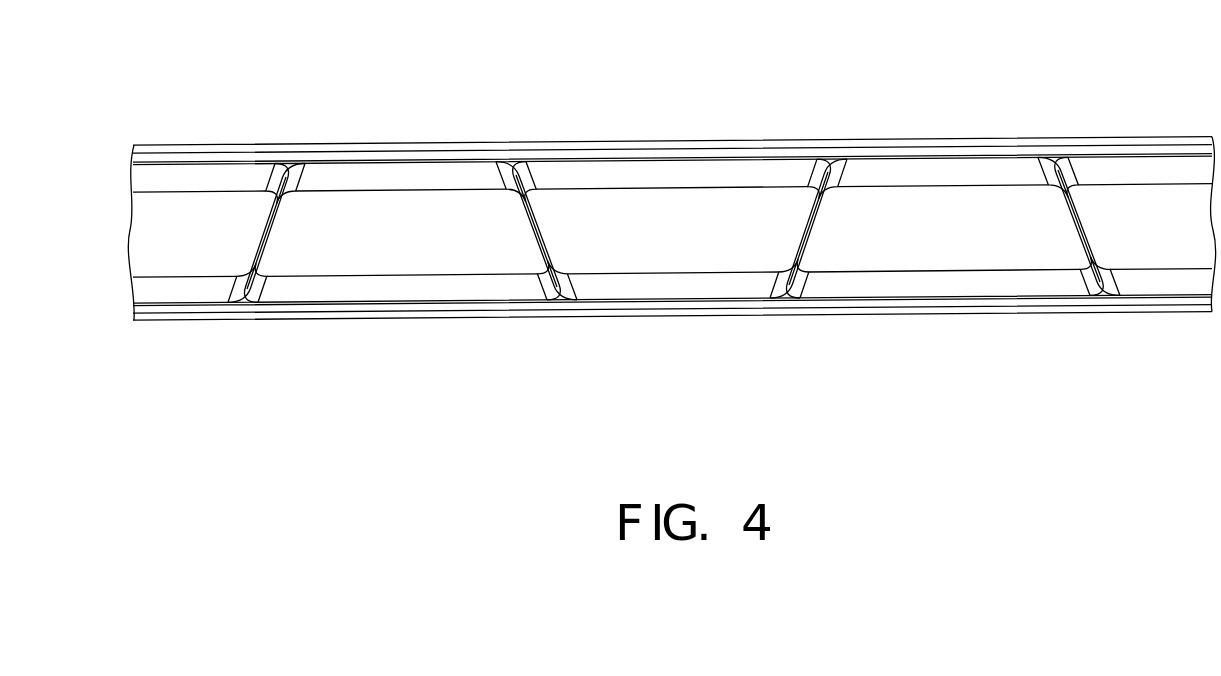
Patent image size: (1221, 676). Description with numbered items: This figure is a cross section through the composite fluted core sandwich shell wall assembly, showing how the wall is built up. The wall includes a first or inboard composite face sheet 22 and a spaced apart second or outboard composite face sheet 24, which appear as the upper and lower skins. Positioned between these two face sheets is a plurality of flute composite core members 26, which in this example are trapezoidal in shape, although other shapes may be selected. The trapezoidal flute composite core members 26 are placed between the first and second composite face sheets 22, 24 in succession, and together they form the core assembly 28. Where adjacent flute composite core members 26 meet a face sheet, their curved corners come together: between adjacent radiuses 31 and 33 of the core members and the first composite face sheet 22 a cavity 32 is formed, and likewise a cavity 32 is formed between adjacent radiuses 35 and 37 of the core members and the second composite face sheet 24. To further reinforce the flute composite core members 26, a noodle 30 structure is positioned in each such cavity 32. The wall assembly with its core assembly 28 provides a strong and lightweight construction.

The first composite face sheet 22 is at (893, 142).
The second composite face sheet 24 is at (983, 318).
The flute composite core member 26 is at (672, 239).
The core assembly 28 is at (1003, 188).
The noodle 30 is at (843, 161).
The radius 31 is at (498, 166).
The cavity 32 is at (779, 226).
The radius 33 is at (540, 192).
The radius 35 is at (1088, 272).
The radius 37 is at (1117, 280).